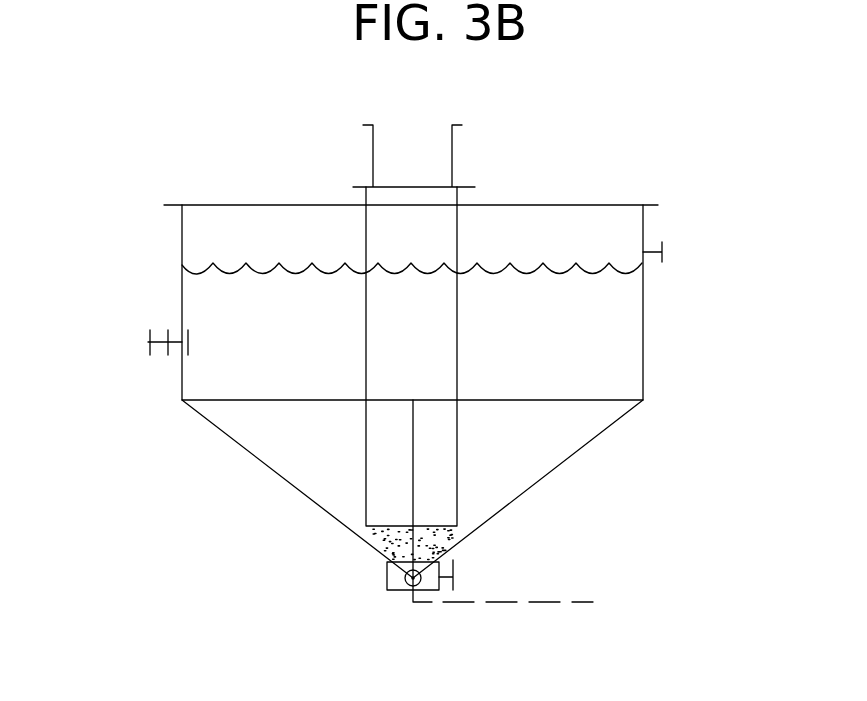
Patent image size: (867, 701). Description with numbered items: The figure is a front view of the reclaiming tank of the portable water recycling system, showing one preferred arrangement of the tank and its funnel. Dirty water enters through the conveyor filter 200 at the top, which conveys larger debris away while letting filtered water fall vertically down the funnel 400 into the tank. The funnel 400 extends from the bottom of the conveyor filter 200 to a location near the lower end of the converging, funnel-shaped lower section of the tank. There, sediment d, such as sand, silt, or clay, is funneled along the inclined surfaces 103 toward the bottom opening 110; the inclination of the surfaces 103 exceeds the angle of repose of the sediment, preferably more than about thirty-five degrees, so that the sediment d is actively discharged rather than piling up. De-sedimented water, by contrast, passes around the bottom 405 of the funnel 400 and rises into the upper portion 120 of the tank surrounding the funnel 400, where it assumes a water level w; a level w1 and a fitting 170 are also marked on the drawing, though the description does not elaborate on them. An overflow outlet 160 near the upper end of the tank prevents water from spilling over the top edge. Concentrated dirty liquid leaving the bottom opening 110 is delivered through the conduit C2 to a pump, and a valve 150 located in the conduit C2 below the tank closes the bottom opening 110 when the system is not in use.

The conveyor filter 200 is at (460, 105).
The funnel 400 is at (366, 312).
The upper water level w1 is at (650, 225).
The overflow outlet 160 is at (664, 243).
The water level w is at (645, 271).
The upper portion 120 is at (597, 320).
The inlet fitting 170 is at (148, 342).
The inclined surfaces 103 is at (289, 485).
The sediment d is at (385, 548).
The bottom of the funnel 405 is at (443, 530).
The bottom opening 110 is at (380, 583).
The conduit C2 is at (511, 602).
The valve 150 is at (455, 582).